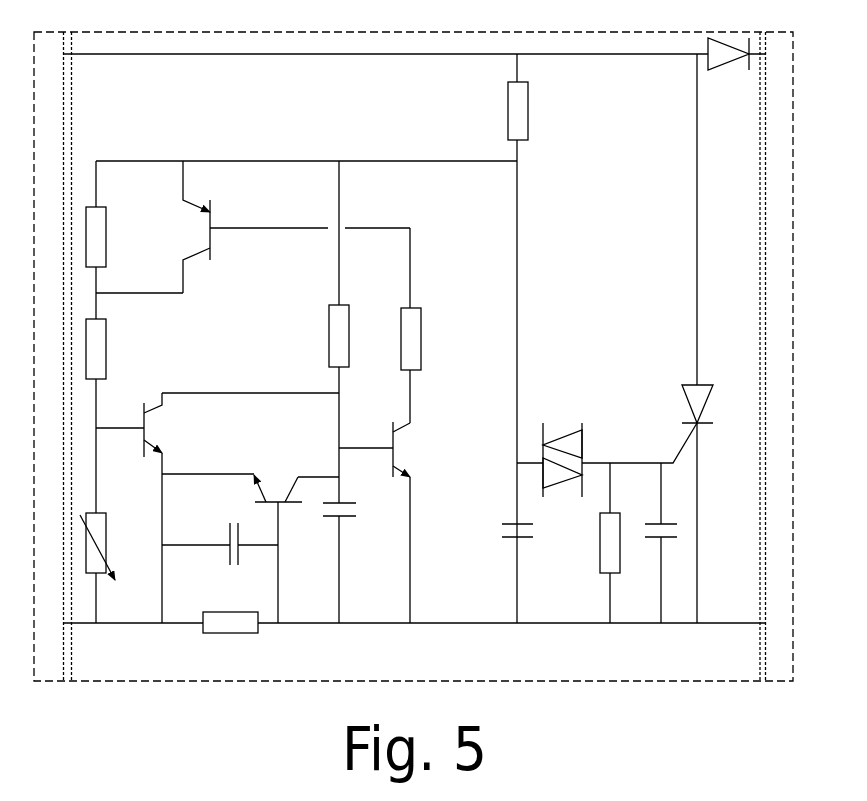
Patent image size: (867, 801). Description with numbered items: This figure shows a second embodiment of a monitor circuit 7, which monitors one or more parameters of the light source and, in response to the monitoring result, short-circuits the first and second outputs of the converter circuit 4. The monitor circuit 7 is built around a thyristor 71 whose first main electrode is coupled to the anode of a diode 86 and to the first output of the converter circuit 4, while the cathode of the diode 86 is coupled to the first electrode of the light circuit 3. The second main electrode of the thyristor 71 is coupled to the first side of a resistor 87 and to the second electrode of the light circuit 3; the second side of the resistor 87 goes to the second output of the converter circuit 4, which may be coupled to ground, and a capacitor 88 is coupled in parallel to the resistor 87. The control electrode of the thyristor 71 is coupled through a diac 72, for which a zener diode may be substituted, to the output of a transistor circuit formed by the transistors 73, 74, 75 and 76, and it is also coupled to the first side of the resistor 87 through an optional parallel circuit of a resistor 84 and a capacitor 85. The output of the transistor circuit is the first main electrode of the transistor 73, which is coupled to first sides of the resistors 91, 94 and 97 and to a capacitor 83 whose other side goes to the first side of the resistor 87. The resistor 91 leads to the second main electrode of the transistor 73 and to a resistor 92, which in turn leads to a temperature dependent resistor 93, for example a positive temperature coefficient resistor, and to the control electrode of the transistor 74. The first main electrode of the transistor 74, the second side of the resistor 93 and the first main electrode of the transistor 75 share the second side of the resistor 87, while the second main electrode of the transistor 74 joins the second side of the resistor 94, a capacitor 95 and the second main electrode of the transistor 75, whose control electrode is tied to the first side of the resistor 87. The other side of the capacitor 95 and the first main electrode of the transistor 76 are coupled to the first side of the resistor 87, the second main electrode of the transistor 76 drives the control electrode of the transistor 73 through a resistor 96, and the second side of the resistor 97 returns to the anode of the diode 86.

The light circuit 3 is at (780, 681).
The converter circuit 4 is at (48, 681).
The monitor circuit 7 is at (717, 681).
The thyristor 71 is at (706, 423).
The diac 72 is at (562, 477).
The transistor 73 is at (290, 227).
The transistor 74 is at (166, 508).
The transistor 75 is at (278, 476).
The transistor 76 is at (418, 522).
The capacitor 83 is at (527, 548).
The resistor 84 is at (622, 560).
The capacitor 85 is at (669, 548).
The diode 86 is at (736, 72).
The resistor 87 is at (230, 640).
The capacitor 88 is at (233, 561).
The resistor 91 is at (112, 240).
The resistor 92 is at (112, 416).
The temperature dependent resistor 93 is at (109, 568).
The resistor 94 is at (356, 336).
The capacitor 95 is at (351, 527).
The resistor 96 is at (430, 339).
The resistor 97 is at (535, 97).